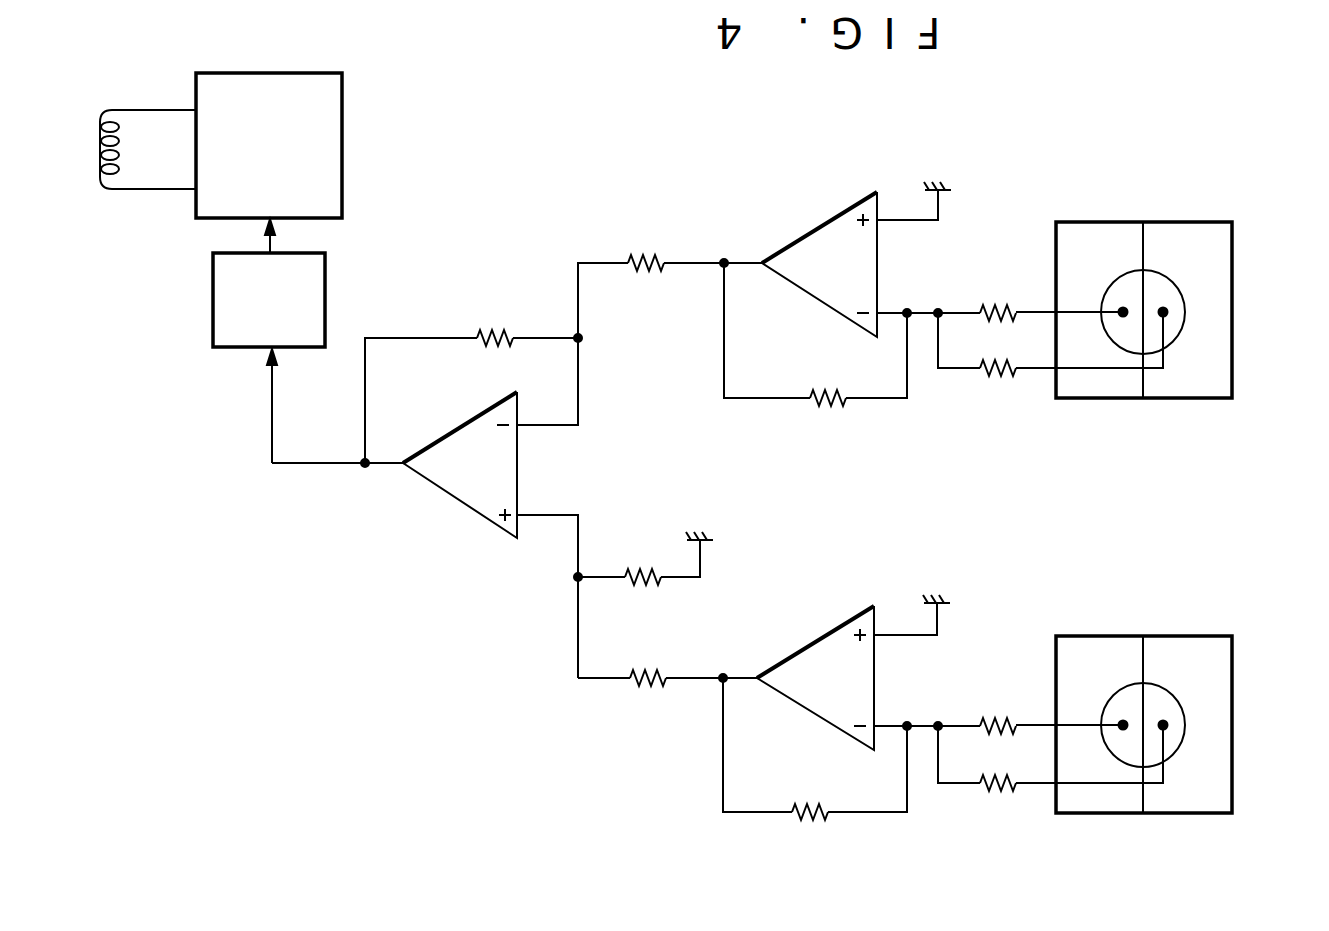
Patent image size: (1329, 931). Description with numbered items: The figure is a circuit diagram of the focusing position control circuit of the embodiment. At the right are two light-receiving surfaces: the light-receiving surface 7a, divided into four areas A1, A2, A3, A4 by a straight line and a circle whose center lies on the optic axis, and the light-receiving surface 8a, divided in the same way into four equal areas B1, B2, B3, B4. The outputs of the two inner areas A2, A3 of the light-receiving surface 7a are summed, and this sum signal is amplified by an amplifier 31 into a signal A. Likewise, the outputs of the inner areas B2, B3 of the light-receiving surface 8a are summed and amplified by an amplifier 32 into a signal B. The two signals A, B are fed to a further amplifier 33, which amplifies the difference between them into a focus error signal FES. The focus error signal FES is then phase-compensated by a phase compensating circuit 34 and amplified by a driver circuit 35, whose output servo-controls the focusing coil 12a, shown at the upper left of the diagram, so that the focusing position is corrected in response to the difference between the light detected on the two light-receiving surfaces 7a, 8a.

The focusing coil 12a is at (107, 192).
The driver circuit 35 is at (342, 153).
The phase compensating circuit 34 is at (230, 348).
The amplifier 33 is at (470, 512).
The amplifier 32 is at (830, 310).
The amplifier 31 is at (820, 720).
The focus error signal FES is at (325, 481).
The signal A is at (695, 682).
The signal B is at (694, 266).
The area A1 is at (1225, 745).
The area A2 is at (1157, 698).
The area A3 is at (1127, 698).
The area A4 is at (1085, 805).
The light-receiving surface 7a is at (1195, 815).
The area B1 is at (1225, 305).
The area B2 is at (1157, 280).
The area B3 is at (1127, 285).
The area B4 is at (1095, 390).
The light-receiving surface 8a is at (1193, 400).